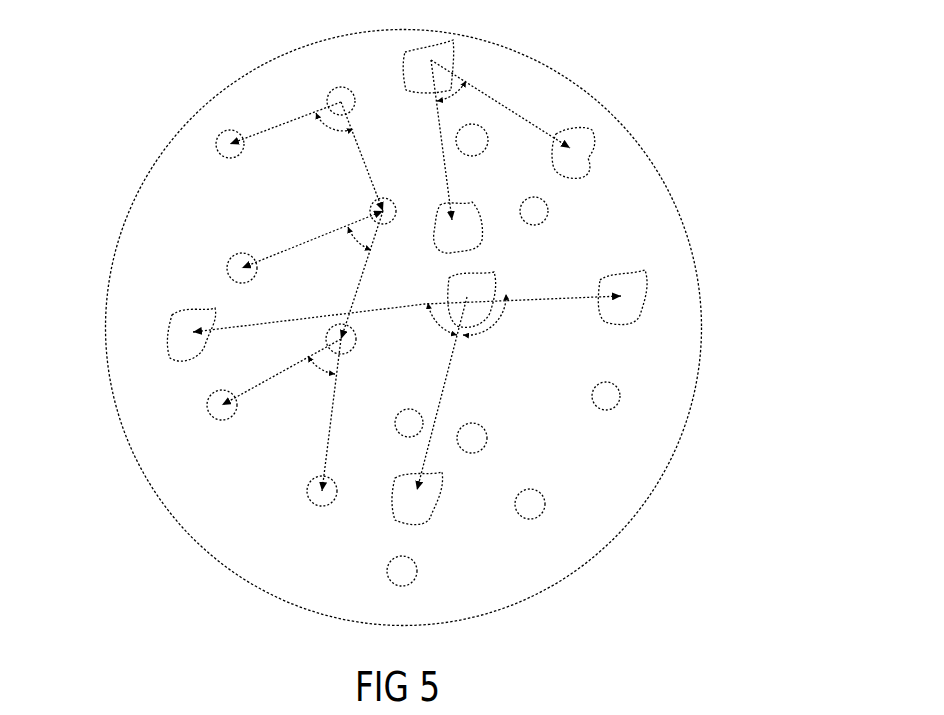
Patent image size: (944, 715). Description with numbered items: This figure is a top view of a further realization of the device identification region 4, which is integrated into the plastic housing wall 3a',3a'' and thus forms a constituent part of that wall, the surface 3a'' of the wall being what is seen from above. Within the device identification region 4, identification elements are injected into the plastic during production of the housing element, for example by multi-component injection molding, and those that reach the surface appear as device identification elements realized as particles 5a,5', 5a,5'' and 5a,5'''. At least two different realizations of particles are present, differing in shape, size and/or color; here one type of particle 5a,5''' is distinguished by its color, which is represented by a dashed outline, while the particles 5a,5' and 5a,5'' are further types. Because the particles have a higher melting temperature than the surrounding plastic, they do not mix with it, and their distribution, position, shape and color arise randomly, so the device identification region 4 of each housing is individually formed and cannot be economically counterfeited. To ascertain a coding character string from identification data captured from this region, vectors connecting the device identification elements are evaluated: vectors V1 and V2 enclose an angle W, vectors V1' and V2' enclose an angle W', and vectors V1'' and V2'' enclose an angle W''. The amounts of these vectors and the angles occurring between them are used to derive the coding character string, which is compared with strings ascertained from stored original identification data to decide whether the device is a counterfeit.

The device identification region 4 is at (143, 179).
The plastic housing wall and its surface 3a',3a'' is at (121, 534).
The device identification element realized as particle 5' 5a,5' is at (188, 107).
The device identification element realized as particle 5'' 5a,5'' is at (127, 285).
The device identification element realized as particle 5''' 5a,5''' is at (635, 126).
The vector V1 is at (285, 103).
The vector V2 is at (376, 155).
The angle W is at (339, 243).
The vector V1' is at (407, 285).
The vector V2' is at (468, 393).
The angle W' is at (451, 327).
The vector V1'' is at (427, 140).
The vector V2'' is at (500, 104).
The angle W'' is at (457, 104).